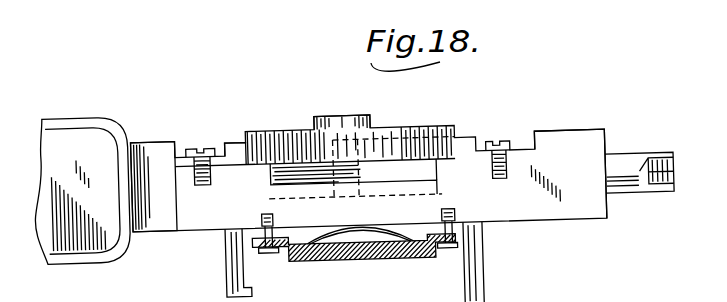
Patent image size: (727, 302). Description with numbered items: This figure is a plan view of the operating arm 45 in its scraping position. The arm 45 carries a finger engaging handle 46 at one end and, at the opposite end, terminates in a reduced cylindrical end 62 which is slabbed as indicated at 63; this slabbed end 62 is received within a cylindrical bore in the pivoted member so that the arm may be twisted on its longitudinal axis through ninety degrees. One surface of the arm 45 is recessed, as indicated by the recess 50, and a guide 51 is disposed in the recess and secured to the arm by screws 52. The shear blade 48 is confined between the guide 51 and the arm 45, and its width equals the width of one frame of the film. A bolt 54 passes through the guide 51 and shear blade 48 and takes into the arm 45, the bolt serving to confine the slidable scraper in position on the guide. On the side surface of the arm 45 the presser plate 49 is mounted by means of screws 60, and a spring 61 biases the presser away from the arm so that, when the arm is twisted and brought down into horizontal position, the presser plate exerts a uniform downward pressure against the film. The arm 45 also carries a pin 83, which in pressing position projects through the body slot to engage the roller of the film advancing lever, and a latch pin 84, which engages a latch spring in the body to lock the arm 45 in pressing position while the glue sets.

The operating arm 45 is at (152, 134).
The finger engaging handle 46 is at (63, 113).
The shear blade 48 is at (273, 179).
The presser plate 49 is at (361, 257).
The recess 50 is at (532, 151).
The guide 51 is at (235, 143).
The screws 52 is at (210, 142).
The bolt 54 is at (373, 117).
The screws 60 is at (267, 250).
The spring 61 is at (384, 258).
The reduced cylindrical end 62 is at (633, 185).
The slabbed portion 63 is at (650, 161).
The pin 83 is at (481, 261).
The latch pin 84 is at (229, 249).